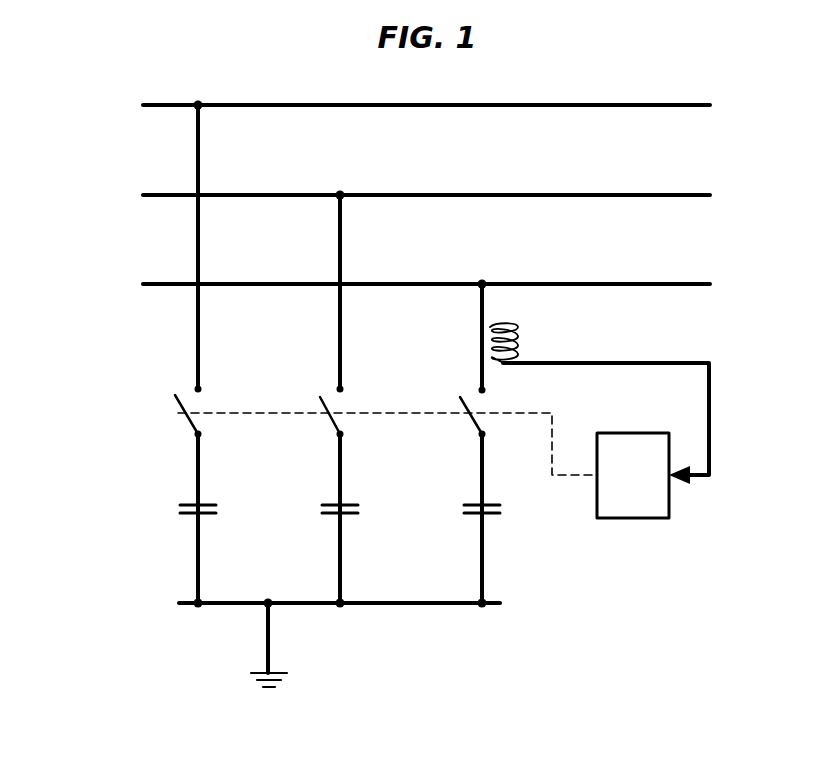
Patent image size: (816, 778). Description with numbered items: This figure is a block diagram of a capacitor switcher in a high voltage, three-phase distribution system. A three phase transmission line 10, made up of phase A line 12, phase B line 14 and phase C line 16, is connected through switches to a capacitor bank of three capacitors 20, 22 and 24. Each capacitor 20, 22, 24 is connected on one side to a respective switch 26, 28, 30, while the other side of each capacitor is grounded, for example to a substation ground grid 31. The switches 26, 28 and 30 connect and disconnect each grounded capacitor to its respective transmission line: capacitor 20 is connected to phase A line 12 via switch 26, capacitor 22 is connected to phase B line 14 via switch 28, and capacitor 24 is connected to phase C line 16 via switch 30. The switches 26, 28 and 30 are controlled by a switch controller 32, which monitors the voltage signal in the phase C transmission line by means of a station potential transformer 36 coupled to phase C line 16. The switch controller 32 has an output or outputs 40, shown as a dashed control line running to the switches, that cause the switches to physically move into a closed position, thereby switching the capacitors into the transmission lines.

The three phase transmission line 10 is at (94, 201).
The phase A line 12 is at (585, 105).
The phase B line 14 is at (585, 195).
The phase C line 16 is at (585, 284).
The capacitor 20 is at (184, 503).
The capacitor 22 is at (328, 503).
The capacitor 24 is at (469, 504).
The switch 26 is at (192, 425).
The switch 28 is at (320, 400).
The switch 30 is at (457, 400).
The substation ground grid 31 is at (270, 631).
The switch controller 32 is at (622, 490).
The station potential transformer 36 is at (518, 343).
The outputs 40 is at (523, 412).